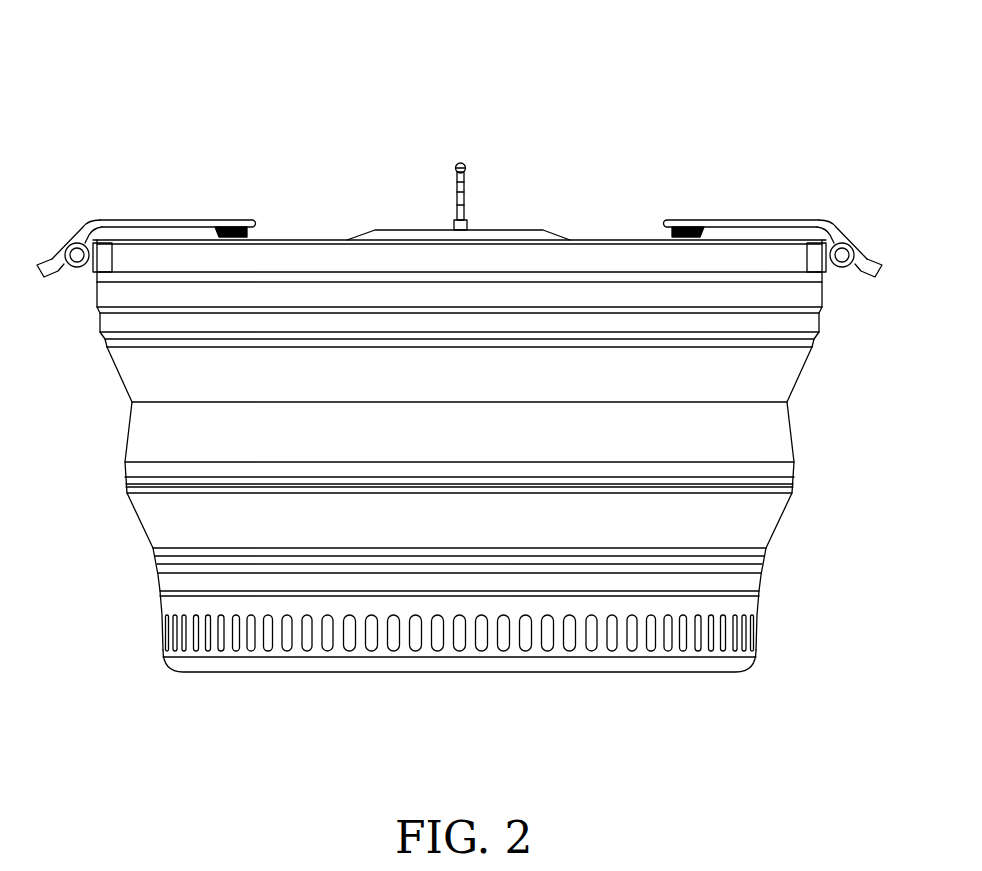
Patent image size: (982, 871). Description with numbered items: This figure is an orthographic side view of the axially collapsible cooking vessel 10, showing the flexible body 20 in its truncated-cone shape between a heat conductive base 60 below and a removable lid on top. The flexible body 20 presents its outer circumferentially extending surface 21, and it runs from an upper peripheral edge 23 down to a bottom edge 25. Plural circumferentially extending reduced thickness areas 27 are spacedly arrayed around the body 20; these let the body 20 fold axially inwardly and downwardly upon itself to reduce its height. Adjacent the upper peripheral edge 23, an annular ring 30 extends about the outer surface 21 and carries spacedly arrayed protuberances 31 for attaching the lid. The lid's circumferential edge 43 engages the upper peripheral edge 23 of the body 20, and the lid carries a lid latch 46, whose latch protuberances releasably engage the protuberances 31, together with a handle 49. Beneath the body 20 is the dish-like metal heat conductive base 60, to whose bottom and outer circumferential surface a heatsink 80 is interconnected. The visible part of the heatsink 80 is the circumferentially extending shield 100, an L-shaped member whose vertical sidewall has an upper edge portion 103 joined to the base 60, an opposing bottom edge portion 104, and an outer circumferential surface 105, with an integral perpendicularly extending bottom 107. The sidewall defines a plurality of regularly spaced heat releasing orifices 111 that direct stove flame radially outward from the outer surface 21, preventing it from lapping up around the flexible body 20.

The axially collapsible cooking vessel 10 is at (770, 117).
The flexible body 20 is at (463, 481).
The outer circumferentially extending surface 21 is at (447, 362).
The upper peripheral edge 23 is at (278, 292).
The bottom edge 25 is at (156, 566).
The reduced thickness areas 27 is at (131, 402).
The annular ring 30 is at (459, 203).
The protuberances 31 is at (93, 272).
The circumferential edge 43 is at (578, 240).
The lid latch 46 is at (95, 222).
The handle 49 is at (466, 196).
The heat conductive base 60 is at (477, 623).
The heatsink 80 is at (767, 635).
The circumferentially extending shield 100 is at (460, 662).
The upper edge portion 103 is at (358, 597).
The bottom edge portion 104 is at (420, 656).
The outer circumferential surface 105 is at (714, 600).
The perpendicularly extending bottom 107 is at (242, 673).
The heat releasing orifices 111 is at (530, 641).